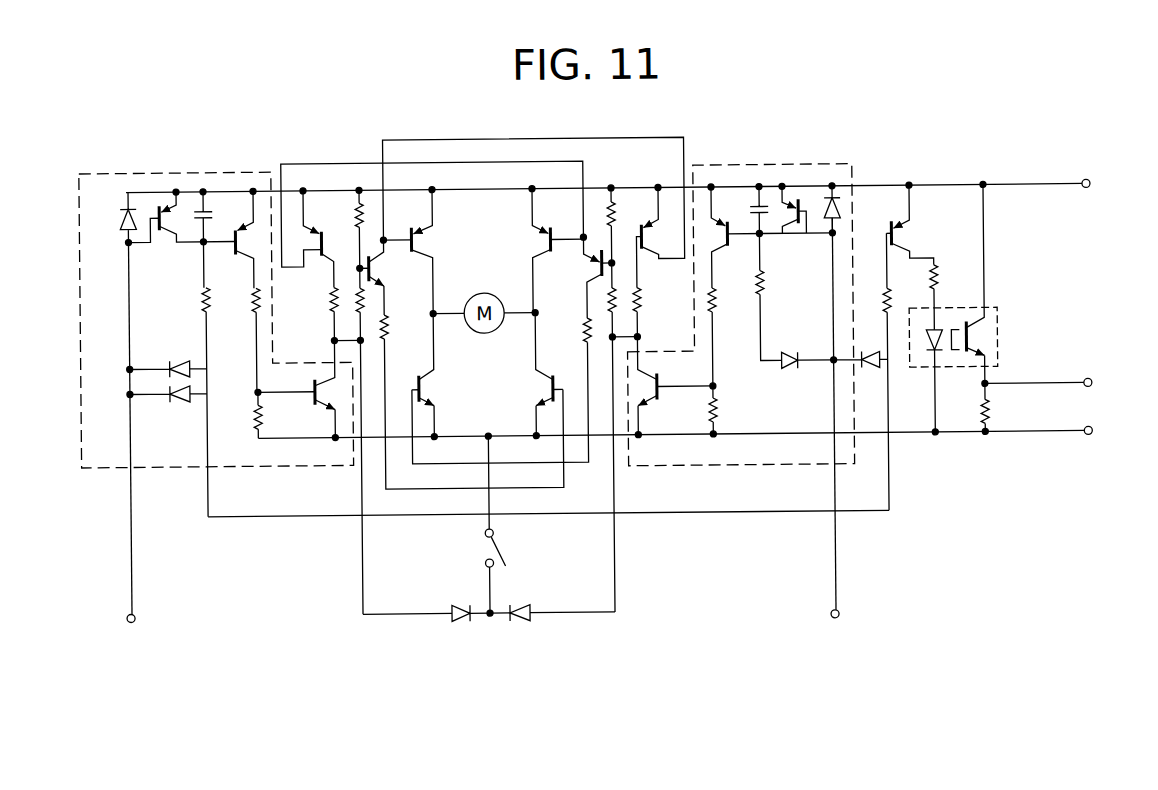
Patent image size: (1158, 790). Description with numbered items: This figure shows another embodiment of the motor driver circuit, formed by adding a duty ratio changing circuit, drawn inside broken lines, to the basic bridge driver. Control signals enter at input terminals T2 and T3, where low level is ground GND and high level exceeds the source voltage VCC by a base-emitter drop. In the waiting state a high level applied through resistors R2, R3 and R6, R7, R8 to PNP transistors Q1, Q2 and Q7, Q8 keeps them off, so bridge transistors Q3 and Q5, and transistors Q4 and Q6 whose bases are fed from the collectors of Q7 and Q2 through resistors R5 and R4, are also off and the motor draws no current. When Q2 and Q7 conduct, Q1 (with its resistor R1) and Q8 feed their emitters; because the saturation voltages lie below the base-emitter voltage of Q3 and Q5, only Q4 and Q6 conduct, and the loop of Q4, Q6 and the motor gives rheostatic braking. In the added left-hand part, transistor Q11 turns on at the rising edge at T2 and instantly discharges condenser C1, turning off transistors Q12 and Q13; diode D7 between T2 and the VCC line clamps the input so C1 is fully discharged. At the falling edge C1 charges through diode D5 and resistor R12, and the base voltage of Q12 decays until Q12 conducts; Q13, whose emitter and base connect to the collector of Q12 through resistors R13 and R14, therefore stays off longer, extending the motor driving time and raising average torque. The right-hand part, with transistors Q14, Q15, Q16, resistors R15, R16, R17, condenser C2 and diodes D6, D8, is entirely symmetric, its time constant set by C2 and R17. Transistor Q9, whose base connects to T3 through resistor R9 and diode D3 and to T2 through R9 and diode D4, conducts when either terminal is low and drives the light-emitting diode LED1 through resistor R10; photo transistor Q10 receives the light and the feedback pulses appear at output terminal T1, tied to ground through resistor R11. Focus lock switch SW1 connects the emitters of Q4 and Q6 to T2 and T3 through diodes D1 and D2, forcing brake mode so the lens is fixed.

The source voltage VCC is at (1108, 186).
The ground GND is at (1111, 436).
The output terminal T1 is at (1054, 382).
The input terminal T2 is at (127, 446).
The input terminal T3 is at (832, 431).
The PNP transistor Q1 is at (432, 224).
The PNP transistor Q2 is at (381, 277).
The PNP transistor Q3 is at (419, 251).
The transistor Q4 is at (499, 388).
The PNP transistor Q5 is at (542, 250).
The transistor Q6 is at (534, 374).
The PNP transistor Q7 is at (583, 278).
The PNP transistor Q8 is at (534, 213).
The transistor Q9 is at (911, 225).
The photo transistor Q10 is at (970, 343).
The transistor Q11 is at (165, 203).
The transistor Q12 is at (237, 239).
The transistor Q13 is at (296, 390).
The transistor Q14 is at (675, 385).
The transistor Q15 is at (772, 237).
The transistor Q16 is at (807, 229).
The resistor R1 is at (320, 314).
The resistor R2 is at (366, 211).
The resistor R3 is at (366, 298).
The resistor R4 is at (472, 401).
The resistor R5 is at (572, 330).
The resistor R6 is at (625, 238).
The resistor R7 is at (610, 298).
The resistor R8 is at (650, 311).
The resistor R9 is at (873, 371).
The resistor R10 is at (955, 296).
The resistor R11 is at (1007, 407).
The resistor R12 is at (186, 379).
The resistor R13 is at (240, 340).
The resistor R14 is at (239, 415).
The resistor R15 is at (731, 337).
The resistor R16 is at (733, 410).
The resistor R17 is at (779, 315).
The condenser C1 is at (216, 216).
The condenser C2 is at (757, 224).
The diode D1 is at (461, 627).
The diode D2 is at (526, 627).
The diode D3 is at (861, 372).
The diode D4 is at (168, 406).
The diode D5 is at (167, 356).
The diode D6 is at (802, 349).
The diode D7 is at (111, 217).
The diode D8 is at (843, 216).
The light-emitting diode LED1 is at (942, 334).
The focus lock switch SW1 is at (514, 525).